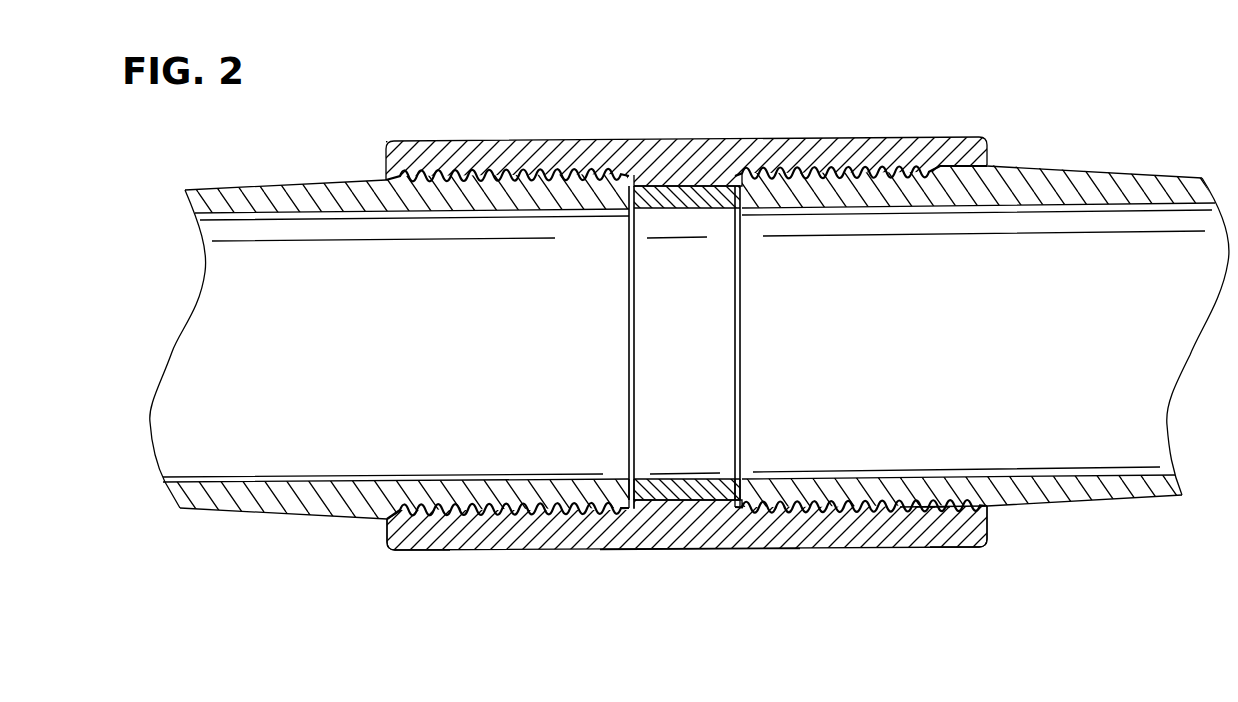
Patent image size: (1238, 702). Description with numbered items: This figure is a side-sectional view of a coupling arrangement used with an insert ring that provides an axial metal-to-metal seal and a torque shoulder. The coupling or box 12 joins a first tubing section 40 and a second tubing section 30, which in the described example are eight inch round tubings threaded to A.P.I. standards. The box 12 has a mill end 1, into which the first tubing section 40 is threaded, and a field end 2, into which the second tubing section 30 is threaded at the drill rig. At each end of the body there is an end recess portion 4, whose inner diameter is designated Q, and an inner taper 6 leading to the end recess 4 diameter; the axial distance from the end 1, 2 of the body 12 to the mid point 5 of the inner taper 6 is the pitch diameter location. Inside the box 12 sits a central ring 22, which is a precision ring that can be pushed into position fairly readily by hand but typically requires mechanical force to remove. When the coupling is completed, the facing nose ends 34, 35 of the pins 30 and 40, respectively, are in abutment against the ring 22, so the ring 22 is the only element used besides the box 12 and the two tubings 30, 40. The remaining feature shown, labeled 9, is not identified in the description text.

The mill end 1 is at (385, 543).
The field end 2 is at (990, 540).
The end recess portion 4 is at (944, 508).
The mid point 5 is at (926, 510).
The inner taper 6 is at (937, 510).
The coupling body 9 is at (680, 186).
The coupling or box 12 is at (705, 549).
The central ring 22 is at (667, 497).
The second tubing section 30 is at (1086, 500).
The nose end 34 is at (733, 483).
The nose end 35 is at (624, 505).
The first tubing section 40 is at (285, 510).